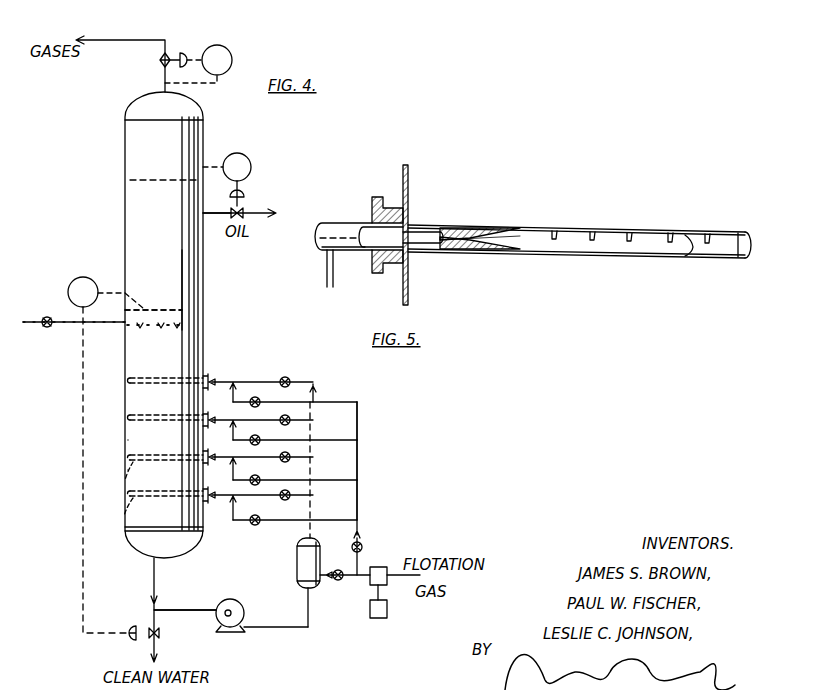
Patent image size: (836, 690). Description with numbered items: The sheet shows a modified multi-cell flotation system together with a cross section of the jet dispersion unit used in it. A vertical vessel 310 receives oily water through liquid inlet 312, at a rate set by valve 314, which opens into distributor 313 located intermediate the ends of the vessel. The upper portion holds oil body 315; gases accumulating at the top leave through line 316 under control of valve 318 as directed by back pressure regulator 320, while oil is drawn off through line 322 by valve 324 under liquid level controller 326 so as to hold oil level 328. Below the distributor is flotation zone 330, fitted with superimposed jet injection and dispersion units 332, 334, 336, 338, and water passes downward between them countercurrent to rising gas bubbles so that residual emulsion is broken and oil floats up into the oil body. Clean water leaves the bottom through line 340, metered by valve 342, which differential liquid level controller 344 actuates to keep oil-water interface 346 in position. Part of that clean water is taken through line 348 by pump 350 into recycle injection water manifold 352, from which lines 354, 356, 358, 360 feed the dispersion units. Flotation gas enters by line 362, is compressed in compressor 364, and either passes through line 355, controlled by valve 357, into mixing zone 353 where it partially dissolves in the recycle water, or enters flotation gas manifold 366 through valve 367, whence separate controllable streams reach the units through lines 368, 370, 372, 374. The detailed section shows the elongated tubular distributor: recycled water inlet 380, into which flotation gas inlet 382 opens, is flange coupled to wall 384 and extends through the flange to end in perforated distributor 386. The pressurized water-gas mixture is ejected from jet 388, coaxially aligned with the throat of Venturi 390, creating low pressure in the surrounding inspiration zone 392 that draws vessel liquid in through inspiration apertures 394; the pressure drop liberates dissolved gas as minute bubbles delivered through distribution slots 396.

In FIG. 4, the vertical vessel 310 is at (142, 128).
In FIG. 4, the liquid inlet 312 is at (68, 328).
In FIG. 4, the distributor 313 is at (172, 330).
In FIG. 4, the valve 314 is at (47, 317).
In FIG. 4, the oil body 315 is at (170, 286).
In FIG. 4, the line 316 is at (160, 74).
In FIG. 4, the valve 318 is at (168, 52).
In FIG. 4, the back pressure regulator 320 is at (222, 46).
In FIG. 4, the line 322 is at (218, 217).
In FIG. 4, the valve 324 is at (246, 200).
In FIG. 4, the liquid level controller 326 is at (245, 155).
In FIG. 4, the oil level 328 is at (135, 181).
In FIG. 4, the flotation zone 330 is at (138, 444).
In FIG. 4, the jet injection and dispersion unit 332 is at (148, 375).
In FIG. 4, the jet injection and dispersion unit 334 is at (130, 417).
In FIG. 4, the jet injection and dispersion unit 336 is at (125, 483).
In FIG. 4, the jet injection and dispersion unit 338 is at (123, 512).
In FIG. 4, the line 340 is at (152, 584).
In FIG. 4, the valve 342 is at (161, 636).
In FIG. 4, the differential liquid level controller 344 is at (103, 258).
In FIG. 4, the oil-water interface 346 is at (182, 311).
In FIG. 4, the line 348 is at (210, 592).
In FIG. 4, the pump 350 is at (228, 599).
In FIG. 4, the recycle injection water manifold 352 is at (290, 628).
In FIG. 4, the mixing zone 353 is at (300, 558).
In FIG. 4, the line 354 is at (253, 378).
In FIG. 4, the line 355 is at (342, 580).
In FIG. 4, the line 356 is at (253, 417).
In FIG. 4, the valve 357 is at (322, 598).
In FIG. 4, the line 358 is at (250, 454).
In FIG. 4, the line 360 is at (250, 492).
In FIG. 4, the line 362 is at (412, 590).
In FIG. 4, the compressor 364 is at (385, 566).
In FIG. 4, the flotation gas manifold 366 is at (360, 468).
In FIG. 4, the valve 367 is at (362, 540).
In FIG. 4, the line 368 is at (342, 402).
In FIG. 4, the line 370 is at (345, 440).
In FIG. 4, the line 372 is at (352, 470).
In FIG. 4, the line 374 is at (350, 512).
In FIG. 5, the recycled water inlet 380 is at (337, 223).
In FIG. 5, the flotation gas inlet 382 is at (327, 288).
In FIG. 5, the wall 384 is at (410, 175).
In FIG. 5, the perforated distributor 386 is at (585, 225).
In FIG. 5, the jet 388 is at (445, 228).
In FIG. 5, the Venturi 390 is at (462, 250).
In FIG. 5, the inspiration zone 392 is at (446, 250).
In FIG. 5, the inspiration apertures 394 is at (428, 223).
In FIG. 5, the distribution slots 396 is at (710, 232).